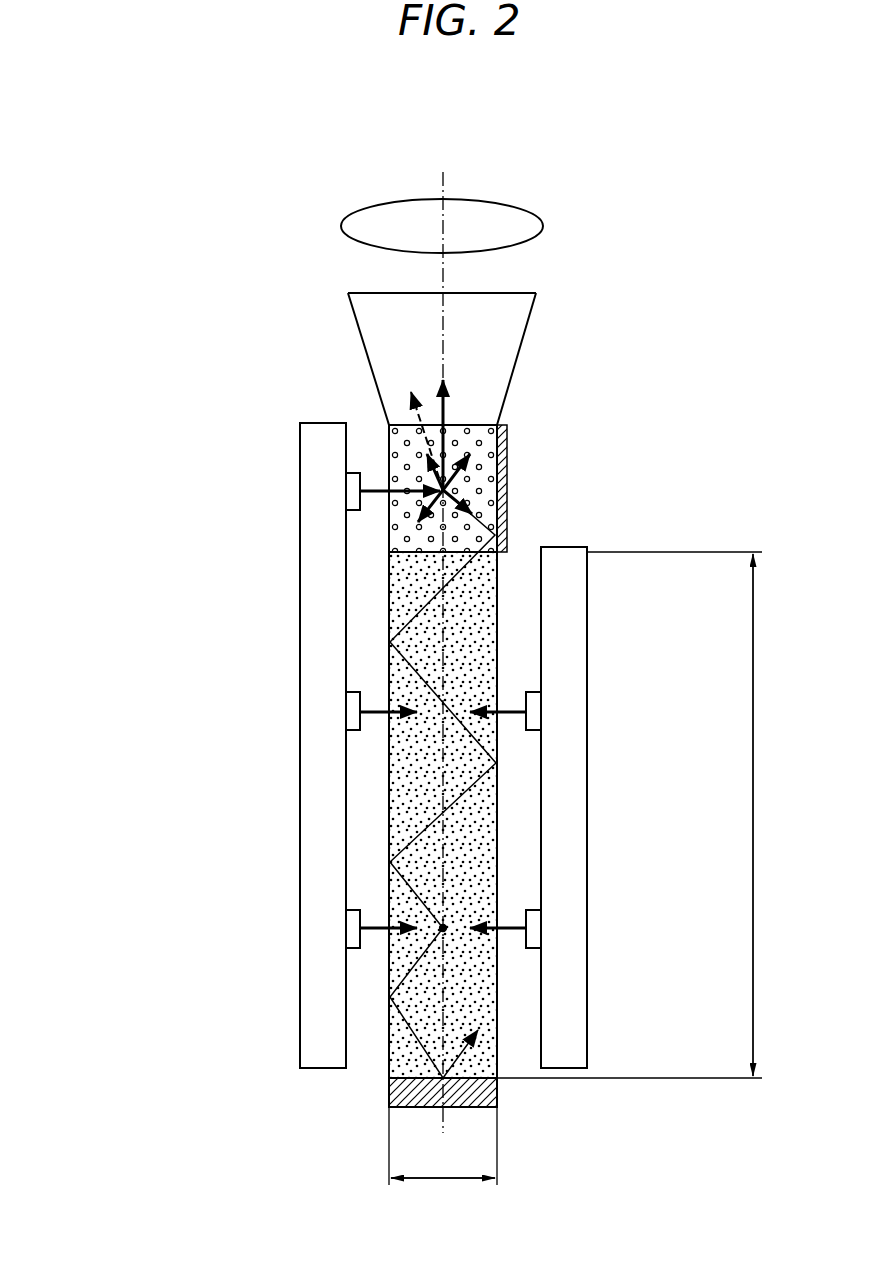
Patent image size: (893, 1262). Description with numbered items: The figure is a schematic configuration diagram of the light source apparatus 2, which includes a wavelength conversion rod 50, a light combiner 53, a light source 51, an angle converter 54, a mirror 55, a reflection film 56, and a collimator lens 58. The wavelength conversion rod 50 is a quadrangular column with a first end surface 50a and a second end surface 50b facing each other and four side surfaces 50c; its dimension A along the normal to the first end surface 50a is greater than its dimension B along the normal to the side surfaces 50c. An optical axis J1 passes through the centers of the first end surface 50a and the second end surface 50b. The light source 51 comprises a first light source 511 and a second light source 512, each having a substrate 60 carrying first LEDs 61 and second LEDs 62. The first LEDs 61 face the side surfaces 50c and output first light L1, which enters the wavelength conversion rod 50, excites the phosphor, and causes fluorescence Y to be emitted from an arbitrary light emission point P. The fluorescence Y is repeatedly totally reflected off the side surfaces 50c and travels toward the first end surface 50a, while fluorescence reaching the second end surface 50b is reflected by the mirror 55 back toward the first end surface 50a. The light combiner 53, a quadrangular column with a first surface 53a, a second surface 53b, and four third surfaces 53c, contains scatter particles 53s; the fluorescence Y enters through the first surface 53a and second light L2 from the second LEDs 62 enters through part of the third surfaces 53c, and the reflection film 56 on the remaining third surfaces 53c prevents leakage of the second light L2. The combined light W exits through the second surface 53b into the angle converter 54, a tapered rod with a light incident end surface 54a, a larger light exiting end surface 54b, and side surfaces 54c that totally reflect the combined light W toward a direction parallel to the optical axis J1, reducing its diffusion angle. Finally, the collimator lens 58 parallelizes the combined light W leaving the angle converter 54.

The light source apparatus 2 is at (403, 166).
The wavelength conversion rod 50 is at (439, 815).
The first end surface 50a is at (465, 548).
The second end surface 50b is at (470, 1082).
The side surfaces 50c is at (391, 763).
The light source 51 is at (441, 745).
The first light source 511 is at (318, 718).
The second light source 512 is at (735, 748).
The light combiner 53 is at (434, 470).
The first surface 53a is at (395, 570).
The second surface 53b is at (483, 425).
The third surfaces 53c is at (388, 530).
The scatter particles 53s is at (487, 465).
The angle converter 54 is at (450, 339).
The light incident end surface 54a is at (400, 440).
The light exiting end surface 54b is at (363, 292).
The side surfaces 54c is at (527, 330).
The mirror 55 is at (418, 1105).
The reflection film 56 is at (503, 440).
The collimator lens 58 is at (368, 212).
The substrate 60 is at (441, 745).
The first LEDs 61 is at (350, 930).
The second LEDs 62 is at (350, 490).
The optical axis J1 is at (444, 184).
The combined light W is at (438, 392).
The first light L1 is at (377, 927).
The second light L2 is at (375, 490).
The fluorescence Y is at (440, 823).
The light emission point P is at (446, 931).
The dimension A is at (638, 815).
The dimension B is at (443, 1146).